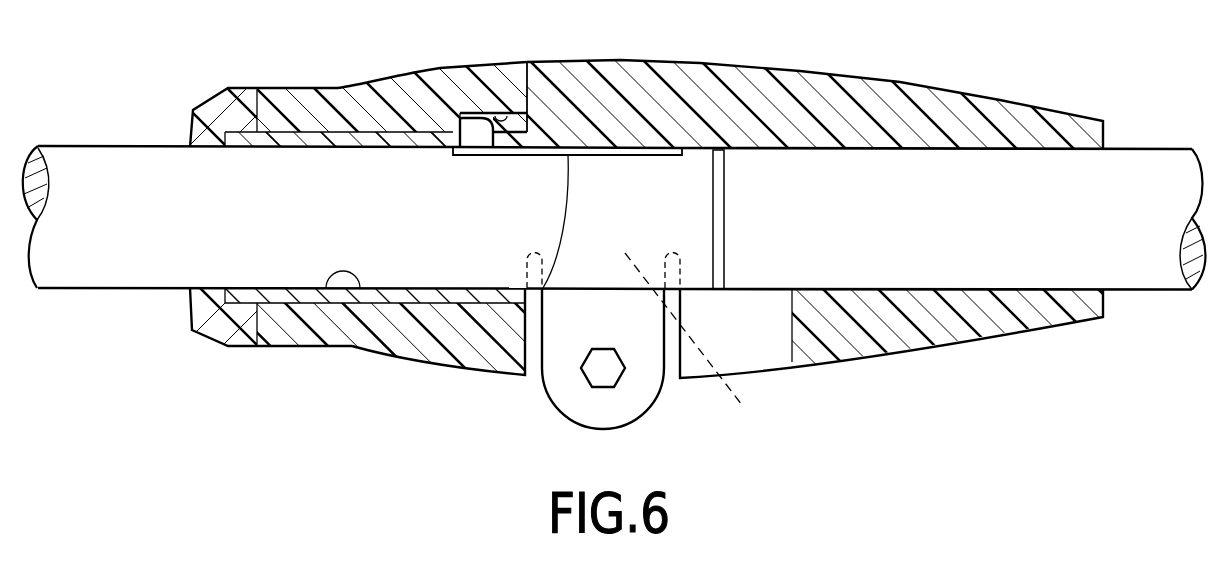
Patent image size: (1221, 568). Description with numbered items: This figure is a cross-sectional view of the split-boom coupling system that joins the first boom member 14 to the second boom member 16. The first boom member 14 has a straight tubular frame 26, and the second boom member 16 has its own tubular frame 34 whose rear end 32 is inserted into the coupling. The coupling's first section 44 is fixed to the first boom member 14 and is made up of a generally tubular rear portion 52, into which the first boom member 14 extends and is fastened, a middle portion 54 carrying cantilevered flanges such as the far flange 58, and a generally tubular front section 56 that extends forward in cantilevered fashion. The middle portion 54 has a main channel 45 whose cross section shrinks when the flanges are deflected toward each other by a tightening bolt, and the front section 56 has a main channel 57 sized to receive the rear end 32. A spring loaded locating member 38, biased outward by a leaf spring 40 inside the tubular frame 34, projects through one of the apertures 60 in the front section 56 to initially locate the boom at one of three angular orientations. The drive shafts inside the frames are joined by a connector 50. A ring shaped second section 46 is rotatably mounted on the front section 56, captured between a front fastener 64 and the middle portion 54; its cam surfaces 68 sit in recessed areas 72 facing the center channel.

The first boom member 14 is at (1155, 149).
The second boom member 16 is at (110, 145).
The tubular frame 26 is at (1157, 290).
The rear end 32 is at (417, 277).
The tubular frame 34 is at (112, 289).
The locating member 38 is at (473, 127).
The leaf spring 40 is at (523, 350).
The first section 44 is at (878, 79).
The main channel 45 is at (701, 338).
The second section 46 is at (350, 86).
The connector 50 is at (728, 148).
The rear portion 52 is at (1018, 340).
The middle portion 54 is at (635, 62).
The front section 56 is at (292, 130).
The main channel 57 is at (320, 300).
The cantilevered flange 58 is at (655, 406).
The apertures 60 is at (506, 113).
The front fastener 64 is at (200, 336).
The cam surfaces 68 is at (510, 115).
The recessed areas 72 is at (528, 128).